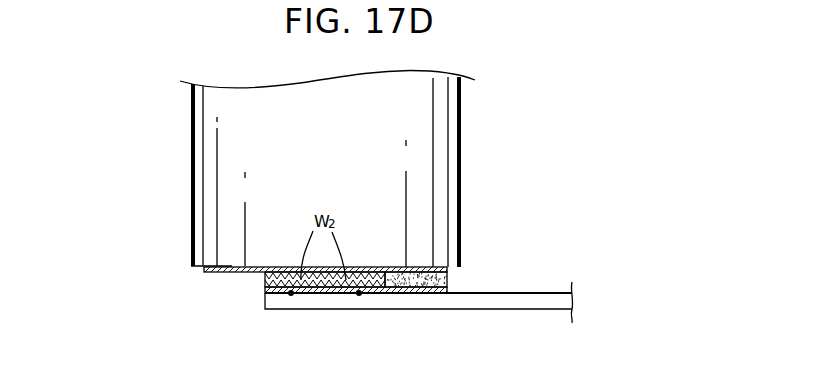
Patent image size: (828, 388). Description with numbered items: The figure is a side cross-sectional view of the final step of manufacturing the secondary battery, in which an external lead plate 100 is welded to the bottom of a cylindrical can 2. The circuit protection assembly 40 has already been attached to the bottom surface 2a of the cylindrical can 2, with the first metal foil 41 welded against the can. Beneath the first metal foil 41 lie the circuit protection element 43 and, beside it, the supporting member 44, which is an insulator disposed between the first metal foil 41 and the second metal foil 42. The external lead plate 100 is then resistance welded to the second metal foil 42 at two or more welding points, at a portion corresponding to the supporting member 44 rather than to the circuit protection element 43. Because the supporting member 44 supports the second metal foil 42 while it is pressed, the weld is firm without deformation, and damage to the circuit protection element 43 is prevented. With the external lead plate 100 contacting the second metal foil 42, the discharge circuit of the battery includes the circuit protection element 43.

The cylindrical can 2 is at (417, 130).
The bottom surface 2a is at (223, 266).
The circuit protection assembly 40 is at (402, 236).
The first metal foil 41 is at (415, 268).
The second metal foil 42 is at (401, 275).
The circuit protection element 43 is at (446, 280).
The supporting member 44 is at (377, 270).
The external lead plate 100 is at (535, 303).